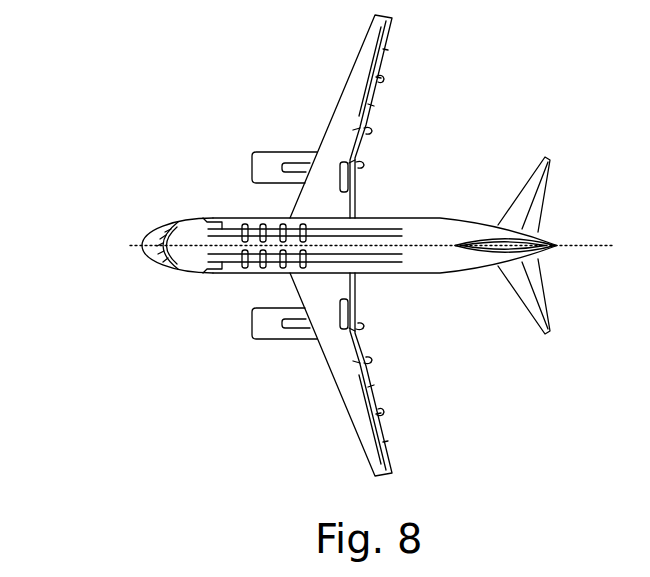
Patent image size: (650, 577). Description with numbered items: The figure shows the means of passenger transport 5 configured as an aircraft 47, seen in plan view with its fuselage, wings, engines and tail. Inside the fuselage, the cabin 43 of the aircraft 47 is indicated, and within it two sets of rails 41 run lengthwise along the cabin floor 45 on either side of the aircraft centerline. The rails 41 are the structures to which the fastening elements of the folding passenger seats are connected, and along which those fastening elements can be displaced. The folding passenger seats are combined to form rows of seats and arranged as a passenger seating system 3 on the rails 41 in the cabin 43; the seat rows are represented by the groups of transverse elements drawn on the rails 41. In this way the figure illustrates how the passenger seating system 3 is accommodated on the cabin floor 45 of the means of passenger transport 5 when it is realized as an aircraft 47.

The aircraft 47 is at (118, 203).
The means of passenger transport 5 is at (153, 295).
The passenger seating system 3 is at (240, 269).
The rails 41 is at (375, 230).
The cabin 43 is at (242, 222).
The cabin floor 45 is at (427, 232).